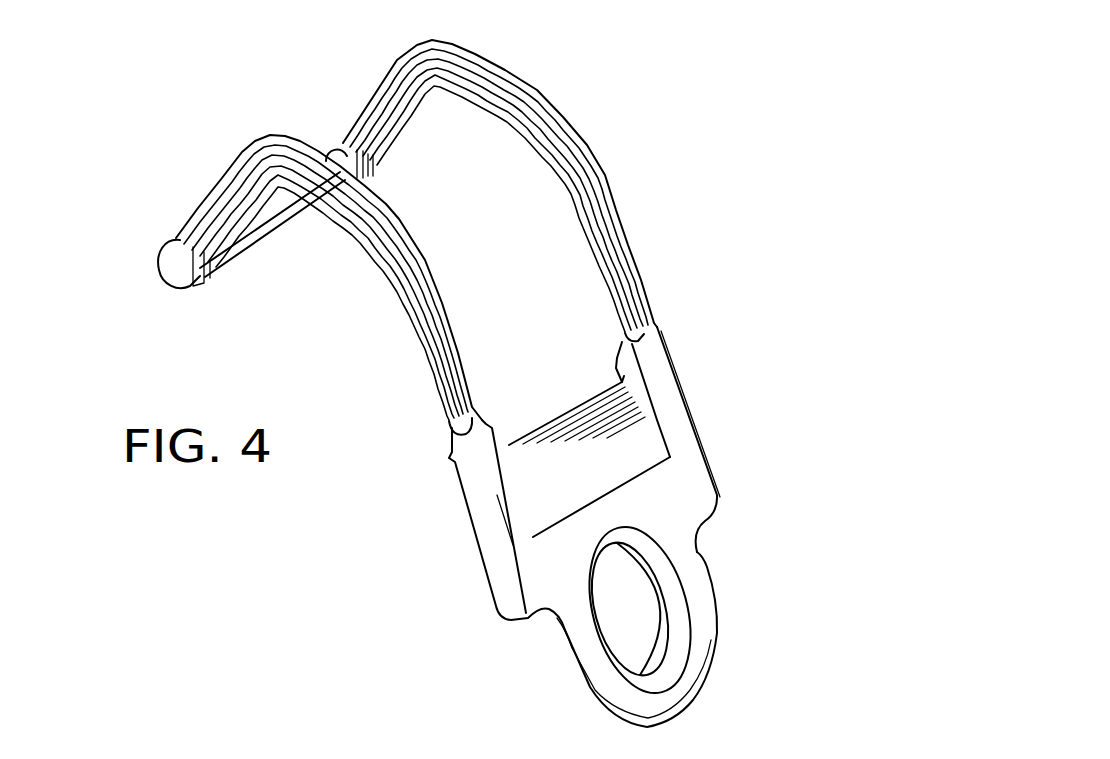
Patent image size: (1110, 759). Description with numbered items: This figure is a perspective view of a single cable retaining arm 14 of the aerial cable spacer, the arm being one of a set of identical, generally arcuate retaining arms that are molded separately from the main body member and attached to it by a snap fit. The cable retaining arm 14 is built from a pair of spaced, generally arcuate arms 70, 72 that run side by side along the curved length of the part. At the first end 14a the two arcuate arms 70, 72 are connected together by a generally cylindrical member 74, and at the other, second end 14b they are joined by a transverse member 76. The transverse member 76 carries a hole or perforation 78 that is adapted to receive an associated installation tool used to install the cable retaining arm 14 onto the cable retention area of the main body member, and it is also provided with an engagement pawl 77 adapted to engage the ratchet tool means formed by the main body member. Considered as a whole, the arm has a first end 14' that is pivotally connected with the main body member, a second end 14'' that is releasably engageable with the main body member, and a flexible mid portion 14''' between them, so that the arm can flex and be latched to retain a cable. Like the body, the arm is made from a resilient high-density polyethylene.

The cable retaining arm 14 is at (437, 399).
The first end 14a is at (333, 118).
The second end 14b is at (657, 298).
The first end 14' is at (126, 291).
The second end 14'' is at (694, 655).
The flexible mid portion 14''' is at (429, 180).
The arcuate arm 70 is at (330, 240).
The arcuate arm 72 is at (600, 128).
The cylindrical member 74 is at (258, 247).
The transverse member 76 is at (683, 487).
The engagement pawl 77 is at (580, 407).
The hole 78 is at (640, 613).